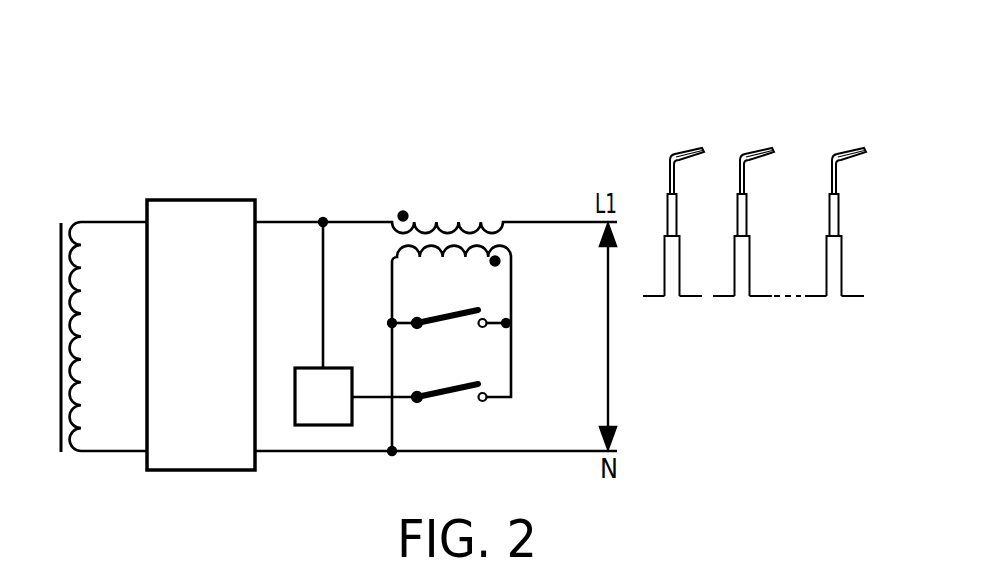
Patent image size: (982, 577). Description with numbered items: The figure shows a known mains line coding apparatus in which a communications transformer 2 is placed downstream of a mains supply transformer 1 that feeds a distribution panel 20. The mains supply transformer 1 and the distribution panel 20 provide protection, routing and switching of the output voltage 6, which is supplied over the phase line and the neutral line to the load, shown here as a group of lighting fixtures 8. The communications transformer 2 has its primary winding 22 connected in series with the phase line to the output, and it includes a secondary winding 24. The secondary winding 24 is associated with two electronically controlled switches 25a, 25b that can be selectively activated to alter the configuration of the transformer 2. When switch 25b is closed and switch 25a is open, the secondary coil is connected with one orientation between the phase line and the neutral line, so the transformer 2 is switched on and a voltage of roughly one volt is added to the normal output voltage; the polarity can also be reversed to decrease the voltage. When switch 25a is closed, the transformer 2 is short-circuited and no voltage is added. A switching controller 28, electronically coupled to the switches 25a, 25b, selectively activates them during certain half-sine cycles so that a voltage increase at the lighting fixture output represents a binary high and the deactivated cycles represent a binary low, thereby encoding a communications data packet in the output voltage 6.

The mains supply transformer 1 is at (69, 212).
The communications transformer 2 is at (502, 198).
The output voltage 6 is at (609, 330).
The lighting fixtures 8 is at (787, 308).
The distribution panel 20 is at (217, 338).
The primary winding 22 is at (450, 221).
The secondary winding 24 is at (500, 250).
The switch 25a is at (470, 308).
The switch 25b is at (470, 382).
The switching controller 28 is at (338, 410).